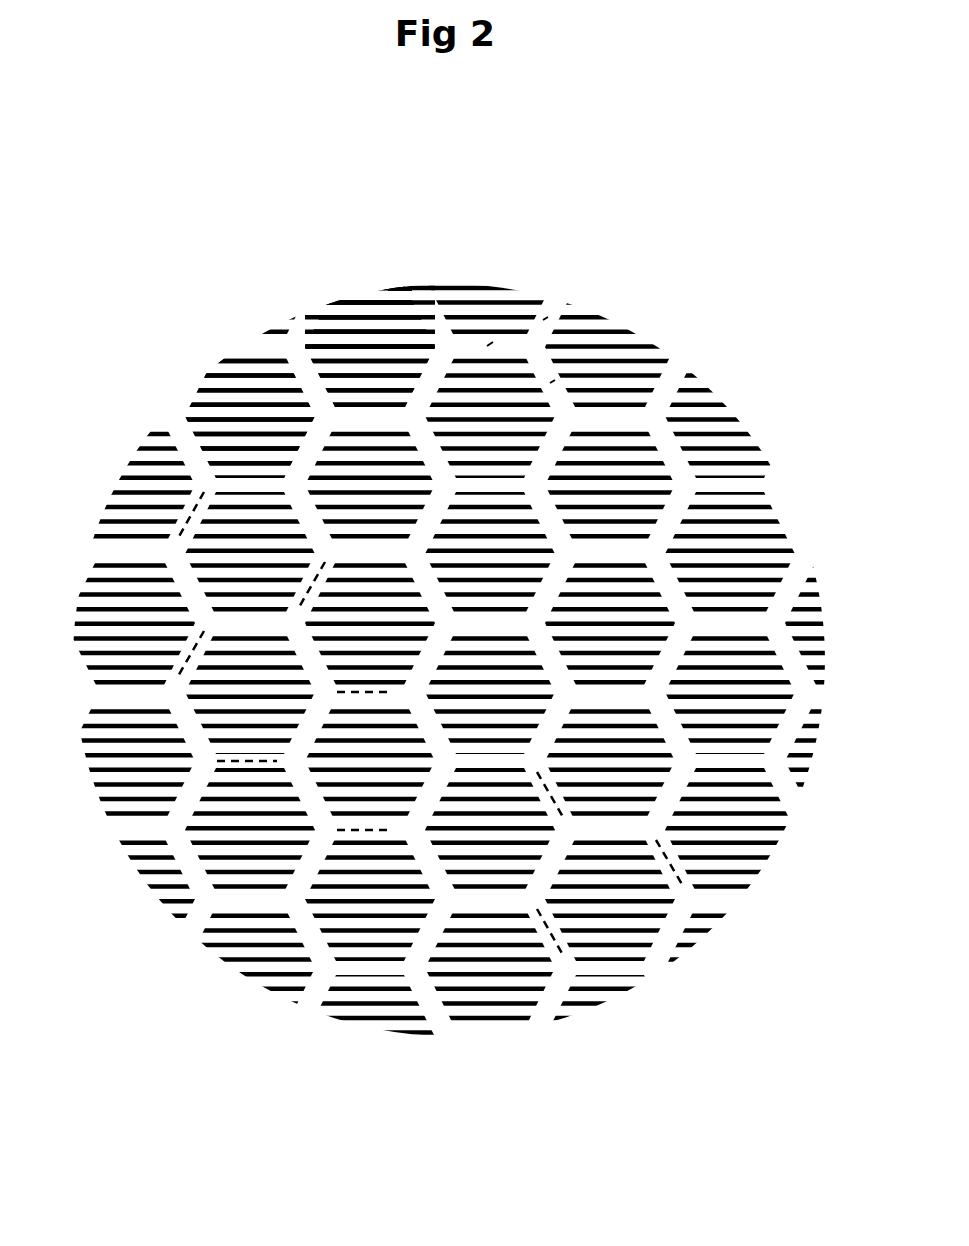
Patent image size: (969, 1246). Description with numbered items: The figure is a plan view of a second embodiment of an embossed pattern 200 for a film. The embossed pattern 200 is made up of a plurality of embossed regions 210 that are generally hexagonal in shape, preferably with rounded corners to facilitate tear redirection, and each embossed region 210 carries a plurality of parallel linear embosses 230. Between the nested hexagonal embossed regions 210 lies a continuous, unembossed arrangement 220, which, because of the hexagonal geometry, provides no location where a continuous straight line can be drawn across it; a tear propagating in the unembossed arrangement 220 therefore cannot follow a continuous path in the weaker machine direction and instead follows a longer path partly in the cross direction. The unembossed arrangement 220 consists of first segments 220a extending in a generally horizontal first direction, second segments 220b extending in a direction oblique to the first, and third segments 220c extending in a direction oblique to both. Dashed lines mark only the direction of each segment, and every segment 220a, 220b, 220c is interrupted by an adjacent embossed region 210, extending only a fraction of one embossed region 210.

The embossed pattern 200 is at (784, 179).
The embossed regions 210 is at (325, 327).
The unembossed arrangement 220 is at (555, 380).
The parallel linear embosses 230 is at (387, 343).
The first segments 220a is at (367, 832).
The second segments 220b is at (310, 583).
The third segments 220c is at (670, 860).